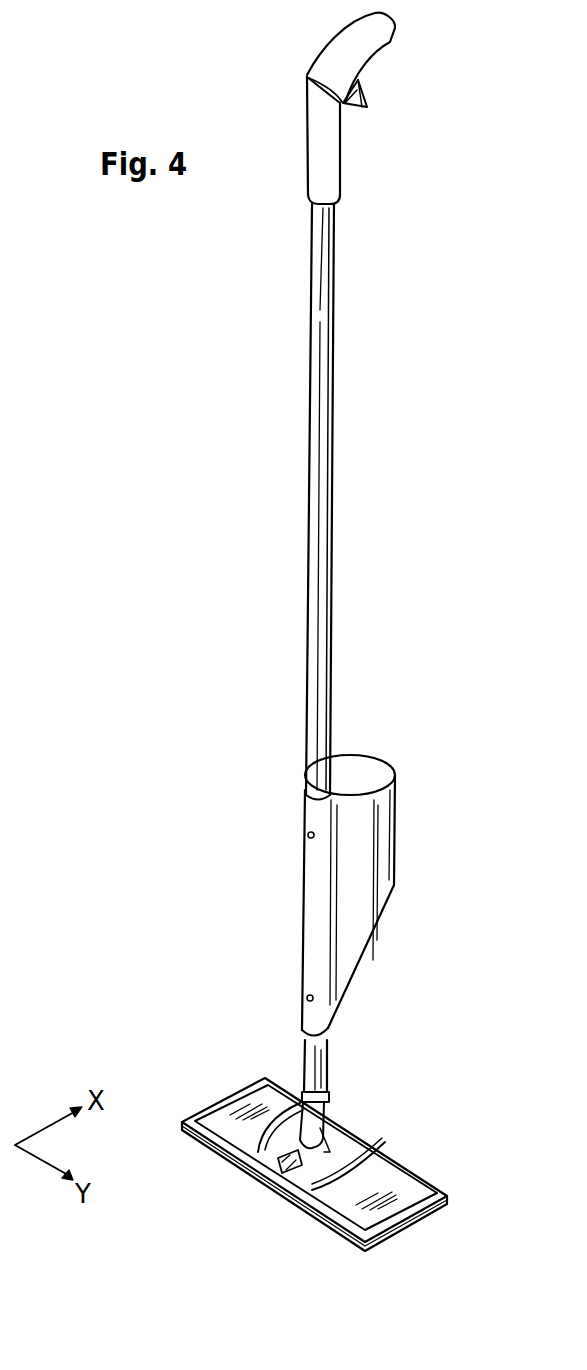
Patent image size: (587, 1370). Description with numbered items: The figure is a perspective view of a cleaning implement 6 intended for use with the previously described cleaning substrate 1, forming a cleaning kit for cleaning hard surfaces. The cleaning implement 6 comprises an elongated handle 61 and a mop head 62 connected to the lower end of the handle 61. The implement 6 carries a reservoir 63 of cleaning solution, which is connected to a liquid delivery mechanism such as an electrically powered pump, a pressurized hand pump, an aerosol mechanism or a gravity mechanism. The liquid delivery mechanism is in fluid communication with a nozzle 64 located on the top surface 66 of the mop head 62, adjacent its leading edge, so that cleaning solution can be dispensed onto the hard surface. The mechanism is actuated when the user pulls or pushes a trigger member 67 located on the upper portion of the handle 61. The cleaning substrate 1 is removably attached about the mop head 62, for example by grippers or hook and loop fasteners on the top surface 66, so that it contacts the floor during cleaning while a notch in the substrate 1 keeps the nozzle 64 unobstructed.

The cleaning substrate 1 is at (413, 1225).
The cleaning implement 6 is at (458, 368).
The handle 61 is at (332, 618).
The mop head 62 is at (210, 1085).
The reservoir 63 is at (368, 828).
The nozzle 64 is at (270, 1160).
The top surface 66 is at (403, 1182).
The trigger member 67 is at (362, 106).